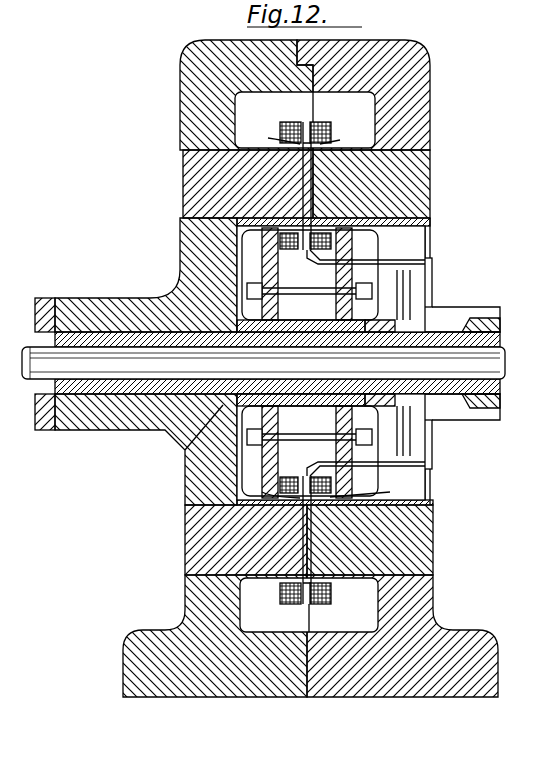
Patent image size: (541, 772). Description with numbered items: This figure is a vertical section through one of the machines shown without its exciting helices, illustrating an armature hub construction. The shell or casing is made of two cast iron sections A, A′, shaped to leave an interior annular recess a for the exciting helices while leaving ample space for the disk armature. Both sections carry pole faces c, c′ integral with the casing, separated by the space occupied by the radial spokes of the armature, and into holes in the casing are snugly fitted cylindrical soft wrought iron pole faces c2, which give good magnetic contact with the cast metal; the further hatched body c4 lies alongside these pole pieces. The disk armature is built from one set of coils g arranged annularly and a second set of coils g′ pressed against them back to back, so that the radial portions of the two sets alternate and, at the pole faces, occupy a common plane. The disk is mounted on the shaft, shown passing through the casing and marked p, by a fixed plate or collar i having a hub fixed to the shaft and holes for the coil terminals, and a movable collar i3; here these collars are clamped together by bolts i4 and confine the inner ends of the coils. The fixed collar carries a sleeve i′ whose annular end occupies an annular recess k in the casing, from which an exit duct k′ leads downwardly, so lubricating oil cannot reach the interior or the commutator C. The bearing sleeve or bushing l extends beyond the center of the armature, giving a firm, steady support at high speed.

The casing section A is at (227, 95).
The casing section A′ is at (379, 95).
The interior annular recess a is at (306, 362).
The coil g is at (320, 352).
The coil g′ is at (288, 353).
The pole face c is at (273, 311).
The pole face c′ is at (363, 310).
The core block c4 is at (248, 184).
The wrought iron pole face c2 is at (309, 362).
The movable collar i3 is at (280, 270).
The bolt i4 is at (309, 364).
The sleeve i′ is at (309, 364).
The fixed collar i is at (387, 363).
The annular recess k is at (182, 300).
The exit duct k′ is at (183, 445).
The bearing sleeve l is at (48, 340).
The shaft p is at (253, 363).
The commutator C is at (450, 363).